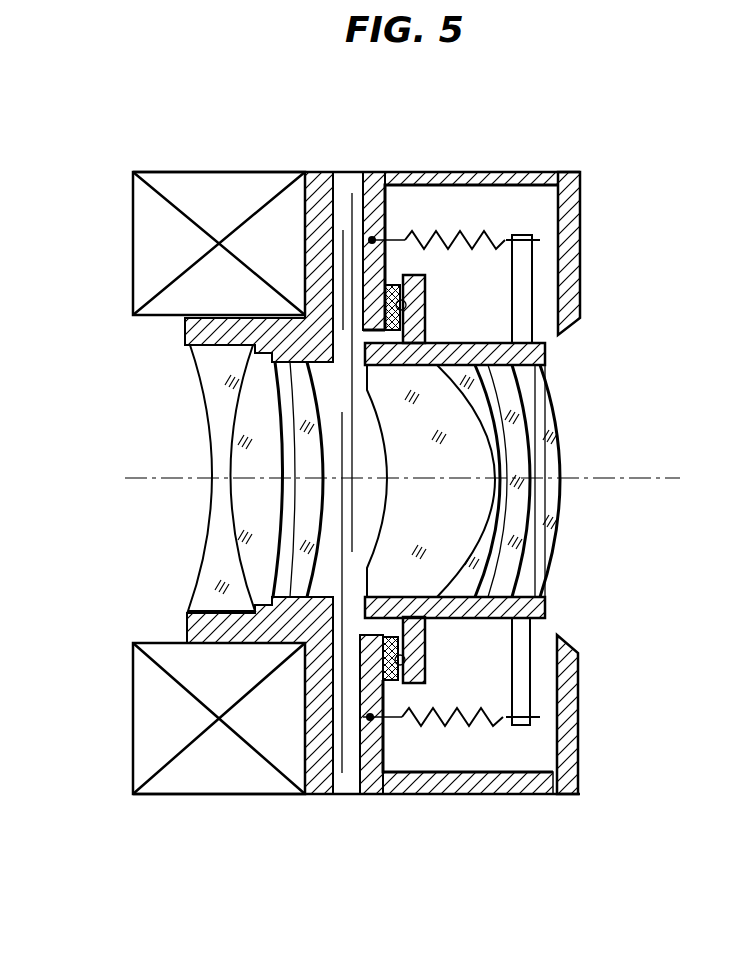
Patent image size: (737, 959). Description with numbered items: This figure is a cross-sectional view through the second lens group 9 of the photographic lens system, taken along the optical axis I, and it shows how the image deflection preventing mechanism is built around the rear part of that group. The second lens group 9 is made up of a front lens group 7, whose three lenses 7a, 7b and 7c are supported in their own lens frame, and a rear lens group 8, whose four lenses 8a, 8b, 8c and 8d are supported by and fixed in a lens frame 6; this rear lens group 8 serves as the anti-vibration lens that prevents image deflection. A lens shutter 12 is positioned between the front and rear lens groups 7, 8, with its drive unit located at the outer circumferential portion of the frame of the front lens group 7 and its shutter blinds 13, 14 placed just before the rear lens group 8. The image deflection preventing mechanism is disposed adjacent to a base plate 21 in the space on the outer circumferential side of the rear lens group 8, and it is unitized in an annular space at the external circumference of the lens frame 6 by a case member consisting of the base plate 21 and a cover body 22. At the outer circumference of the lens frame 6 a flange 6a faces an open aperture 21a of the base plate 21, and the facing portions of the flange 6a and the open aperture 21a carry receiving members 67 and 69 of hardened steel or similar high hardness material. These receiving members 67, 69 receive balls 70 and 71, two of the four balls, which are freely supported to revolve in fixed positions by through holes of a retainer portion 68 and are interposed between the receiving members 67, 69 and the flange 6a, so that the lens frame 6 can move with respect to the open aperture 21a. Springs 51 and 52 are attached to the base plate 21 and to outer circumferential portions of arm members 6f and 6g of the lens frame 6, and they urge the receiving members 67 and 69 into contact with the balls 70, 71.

The optical axis I is at (132, 478).
The second lens group 9 is at (330, 483).
The lens shutter 12 is at (328, 539).
The lens group 7 is at (170, 478).
The lens 7a is at (220, 502).
The lens 7b is at (247, 507).
The lens 7c is at (297, 548).
The shutter blind 13 is at (352, 420).
The shutter blind 14 is at (336, 510).
The base plate 21 is at (372, 240).
The open aperture 21a is at (350, 342).
The receiving member 69 is at (352, 193).
The cover body 22 is at (572, 245).
The retainer portion 68 is at (390, 290).
The receiving member 67 is at (406, 280).
The lens frame 6 is at (510, 538).
The flange 6a is at (420, 292).
The arm member 6g is at (520, 296).
The arm member 6f is at (520, 660).
The ball 70 is at (403, 312).
The ball 71 is at (427, 683).
The spring 52 is at (493, 238).
The spring 51 is at (492, 723).
The lens group 8 is at (540, 494).
The lens 8a is at (440, 560).
The lens 8b is at (483, 537).
The lens 8c is at (510, 512).
The lens 8d is at (603, 481).